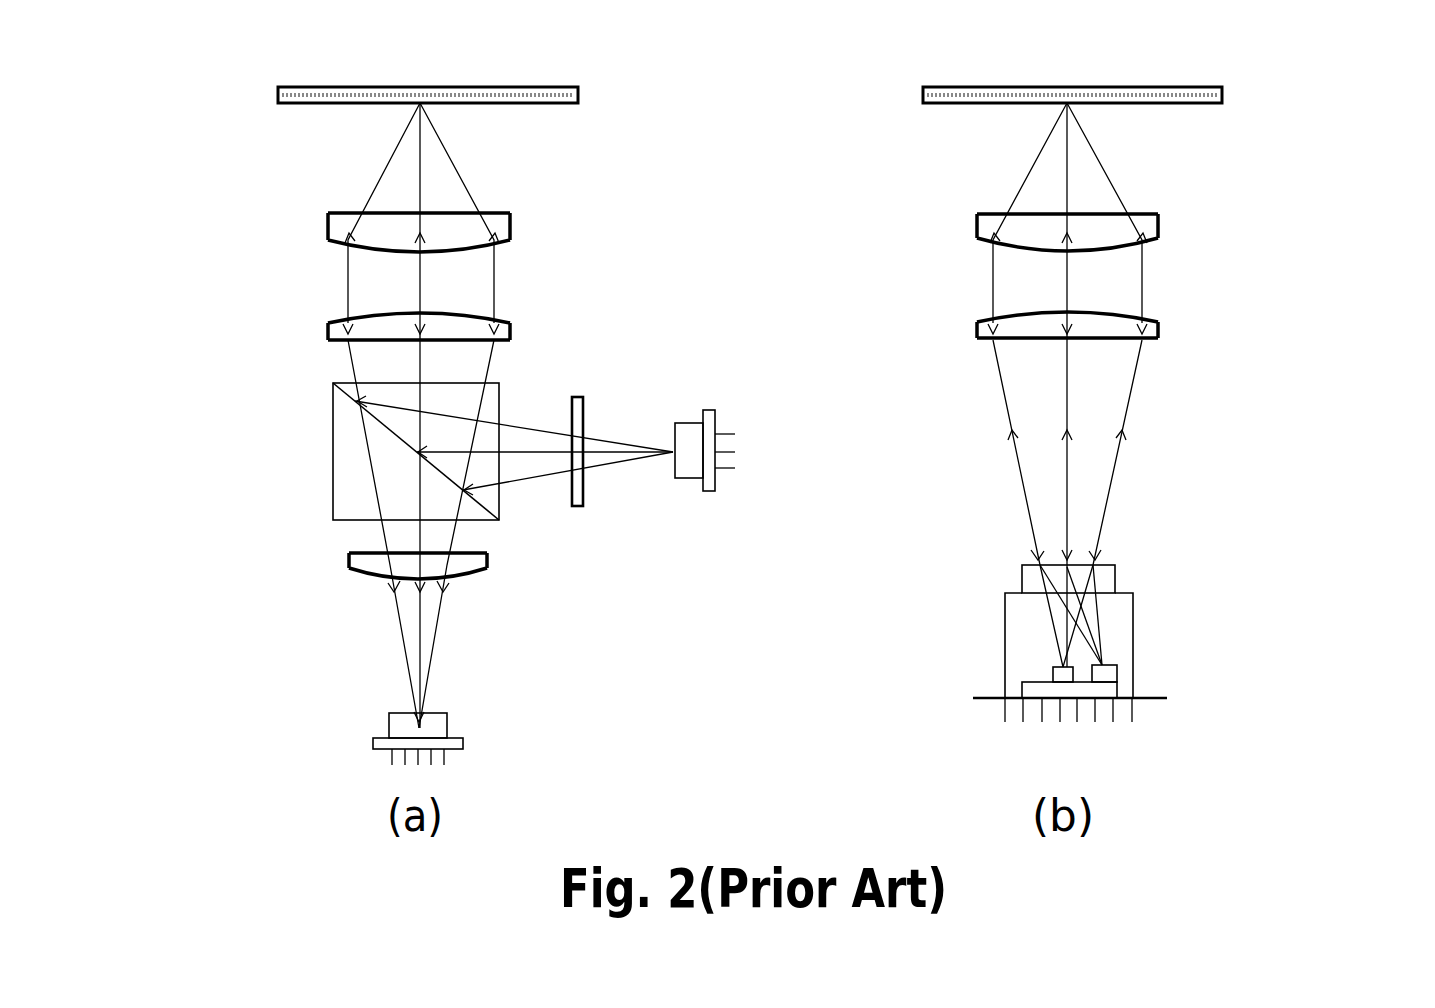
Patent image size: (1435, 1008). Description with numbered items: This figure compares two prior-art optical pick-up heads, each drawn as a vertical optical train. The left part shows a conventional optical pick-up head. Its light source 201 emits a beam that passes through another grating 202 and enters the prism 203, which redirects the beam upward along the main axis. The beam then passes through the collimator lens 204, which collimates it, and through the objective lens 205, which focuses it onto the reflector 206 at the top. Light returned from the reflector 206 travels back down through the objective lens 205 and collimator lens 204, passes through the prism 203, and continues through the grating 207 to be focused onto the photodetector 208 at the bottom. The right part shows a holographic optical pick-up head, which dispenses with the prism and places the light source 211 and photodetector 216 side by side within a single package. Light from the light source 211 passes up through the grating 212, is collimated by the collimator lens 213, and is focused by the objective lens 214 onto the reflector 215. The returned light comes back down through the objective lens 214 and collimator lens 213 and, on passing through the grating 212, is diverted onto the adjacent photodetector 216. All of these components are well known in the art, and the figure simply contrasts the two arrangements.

The light source 201 is at (694, 486).
The another grating 202 is at (590, 415).
The prism 203 is at (327, 488).
The collimator lens 204 is at (518, 320).
The objective lens 205 is at (516, 212).
The reflector 206 is at (455, 95).
The grating 207 is at (347, 565).
The photodetector 208 is at (465, 746).
The light source 211 is at (1044, 661).
The grating 212 is at (1122, 577).
The collimator lens 213 is at (1175, 319).
The objective lens 214 is at (1165, 212).
The reflector 215 is at (1101, 95).
The photodetector 216 is at (1116, 655).